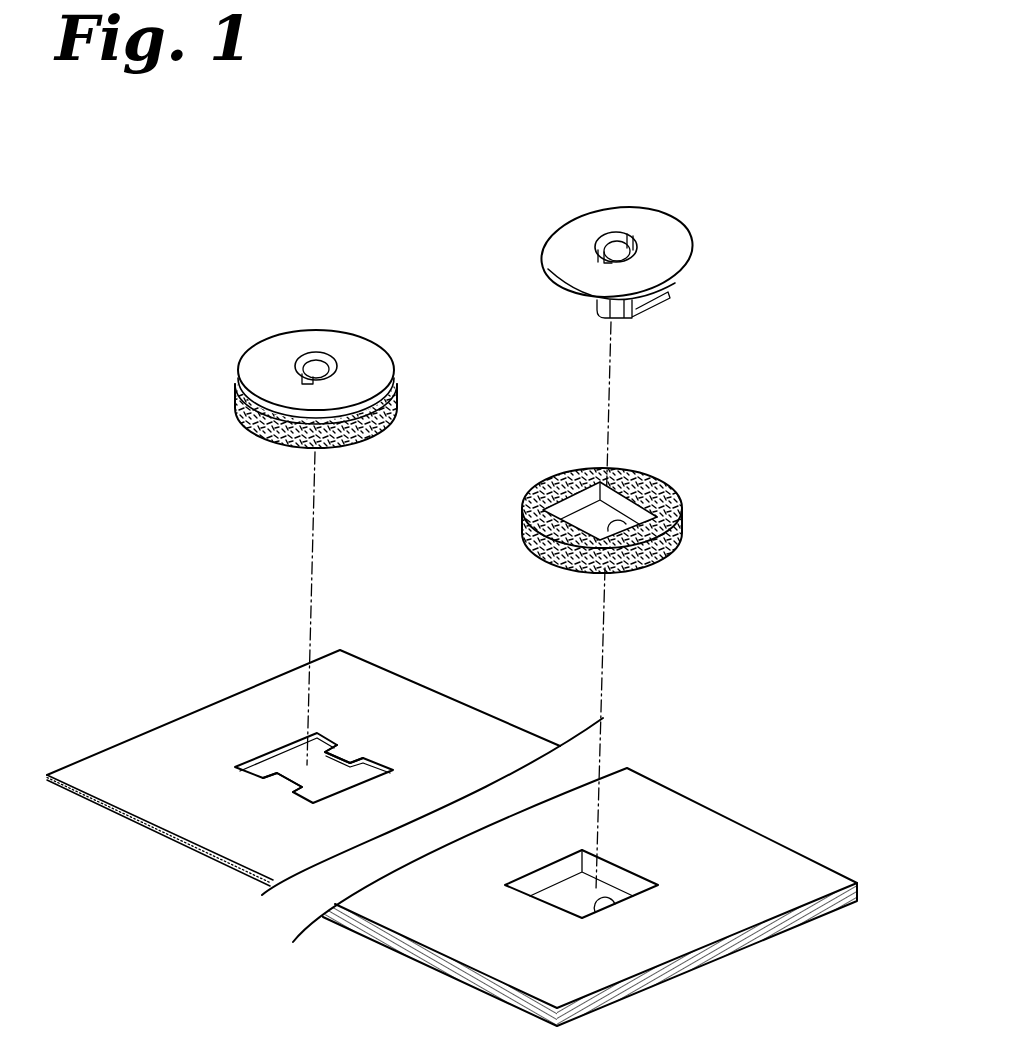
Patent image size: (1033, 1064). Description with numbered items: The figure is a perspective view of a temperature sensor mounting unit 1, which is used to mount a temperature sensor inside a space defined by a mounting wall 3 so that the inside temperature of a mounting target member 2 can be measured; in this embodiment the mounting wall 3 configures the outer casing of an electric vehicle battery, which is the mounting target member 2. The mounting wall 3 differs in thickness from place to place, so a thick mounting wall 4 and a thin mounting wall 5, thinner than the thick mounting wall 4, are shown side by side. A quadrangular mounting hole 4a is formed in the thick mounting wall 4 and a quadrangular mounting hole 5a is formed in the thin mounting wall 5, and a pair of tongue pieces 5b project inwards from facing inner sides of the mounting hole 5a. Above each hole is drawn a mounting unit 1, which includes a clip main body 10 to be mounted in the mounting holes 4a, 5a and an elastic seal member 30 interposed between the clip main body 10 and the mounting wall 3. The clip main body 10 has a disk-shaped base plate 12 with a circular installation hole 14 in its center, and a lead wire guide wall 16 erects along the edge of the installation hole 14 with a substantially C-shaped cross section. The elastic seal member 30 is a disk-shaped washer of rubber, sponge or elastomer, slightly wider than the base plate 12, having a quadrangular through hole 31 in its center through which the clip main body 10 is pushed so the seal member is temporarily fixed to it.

The temperature sensor mounting unit 1 is at (142, 315).
The clip main body 10 is at (237, 350).
The base plate 12 is at (357, 350).
The installation hole 14 is at (303, 379).
The lead wire guide wall 16 is at (626, 232).
The elastic seal member 30 is at (245, 416).
The through hole 31 is at (655, 550).
The mounting target member 2 is at (467, 1049).
The mounting wall 3 is at (192, 960).
The thick mounting wall 4 is at (372, 941).
The mounting hole 4a is at (597, 908).
The thin mounting wall 5 is at (205, 850).
The mounting hole 5a is at (283, 748).
The tongue piece 5b is at (350, 748).